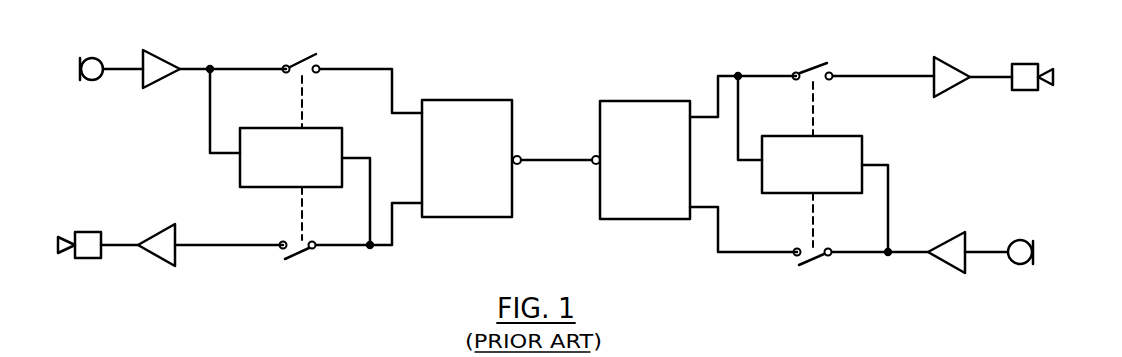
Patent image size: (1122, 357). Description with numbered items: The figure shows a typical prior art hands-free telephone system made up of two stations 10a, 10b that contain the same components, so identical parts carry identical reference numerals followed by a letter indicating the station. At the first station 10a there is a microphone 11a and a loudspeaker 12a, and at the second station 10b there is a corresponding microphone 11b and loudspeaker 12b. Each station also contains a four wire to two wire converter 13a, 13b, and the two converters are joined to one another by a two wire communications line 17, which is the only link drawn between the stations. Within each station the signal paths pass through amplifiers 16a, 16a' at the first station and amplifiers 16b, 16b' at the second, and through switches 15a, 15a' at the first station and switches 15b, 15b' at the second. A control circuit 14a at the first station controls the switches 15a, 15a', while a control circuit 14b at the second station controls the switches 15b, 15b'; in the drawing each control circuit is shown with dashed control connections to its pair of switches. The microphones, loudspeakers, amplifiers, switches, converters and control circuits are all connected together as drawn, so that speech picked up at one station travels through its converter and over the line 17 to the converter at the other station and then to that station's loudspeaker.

The station 10a is at (293, 20).
The station 10b is at (927, 28).
The microphone 11a is at (90, 57).
The microphone 11b is at (1012, 264).
The loudspeaker 12a is at (88, 259).
The loudspeaker 12b is at (1029, 64).
The four wire to two wire converter 13a is at (466, 100).
The four wire to two wire converter 13b is at (648, 101).
The control circuit 14a is at (240, 172).
The control circuit 14b is at (788, 194).
The switch 15a is at (283, 83).
The switch 15a' is at (316, 238).
The switch 15b is at (794, 90).
The switch 15b' is at (831, 245).
The amplifier 16a is at (145, 55).
The amplifier 16a' is at (149, 256).
The amplifier 16b is at (965, 68).
The amplifier 16b' is at (935, 264).
The two wire communications line 17 is at (551, 158).